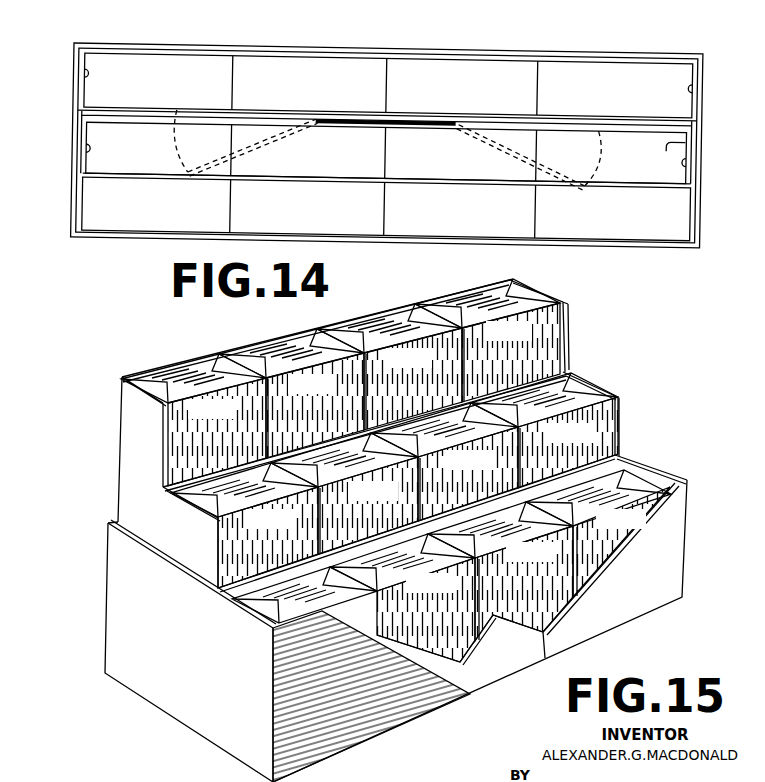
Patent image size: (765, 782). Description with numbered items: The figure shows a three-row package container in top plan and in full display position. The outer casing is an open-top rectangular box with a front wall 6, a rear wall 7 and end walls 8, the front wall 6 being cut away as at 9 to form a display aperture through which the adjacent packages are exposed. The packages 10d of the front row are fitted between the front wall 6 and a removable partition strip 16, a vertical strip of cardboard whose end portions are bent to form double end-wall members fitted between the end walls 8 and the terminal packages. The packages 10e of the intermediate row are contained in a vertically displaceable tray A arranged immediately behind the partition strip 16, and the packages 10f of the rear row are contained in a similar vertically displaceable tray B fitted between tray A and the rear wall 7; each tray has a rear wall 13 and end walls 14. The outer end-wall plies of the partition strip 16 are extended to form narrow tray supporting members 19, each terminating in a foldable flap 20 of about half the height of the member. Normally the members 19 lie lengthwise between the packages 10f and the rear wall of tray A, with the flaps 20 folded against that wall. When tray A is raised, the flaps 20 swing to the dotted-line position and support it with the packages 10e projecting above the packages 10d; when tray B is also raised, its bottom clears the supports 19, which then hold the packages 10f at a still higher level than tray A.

In FIG. 15, the front wall 6 is at (662, 545).
In FIG. 14, the rear wall 7 is at (284, 2).
In FIG. 14, the end walls 8 is at (8, 96).
In FIG. 15, the end walls 8 is at (652, 470).
In FIG. 15, the cut-away portion 9 is at (578, 597).
In FIG. 14, the rear wall 13 is at (348, 14).
In FIG. 15, the rear wall 13 is at (200, 353).
In FIG. 14, the end walls 14 is at (386, 129).
In FIG. 15, the end walls 14 is at (566, 300).
In FIG. 14, the partition strip 16 is at (386, 197).
In FIG. 15, the partition strip 16 is at (618, 452).
In FIG. 14, the tray supporting members 19 is at (387, 127).
In FIG. 14, the foldable flaps 20 is at (178, 70).
In FIG. 14, the packages of the front row 10d is at (386, 209).
In FIG. 15, the packages of the front row 10d is at (451, 566).
In FIG. 14, the packages of the intermediate row 10e is at (386, 152).
In FIG. 15, the packages of the intermediate row 10e is at (394, 480).
In FIG. 14, the packages of the rear row 10f is at (388, 85).
In FIG. 15, the packages of the rear row 10f is at (340, 382).
In FIG. 14, the tray A is at (116, 133).
In FIG. 15, the tray A is at (603, 377).
In FIG. 14, the tray B is at (158, 28).
In FIG. 15, the tray B is at (527, 283).